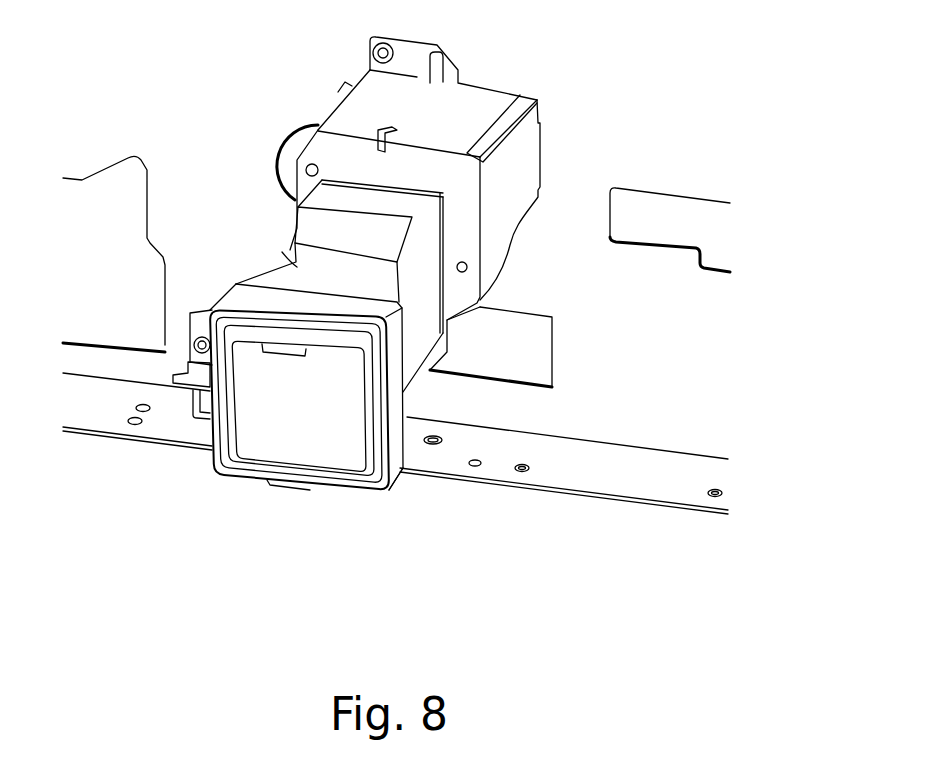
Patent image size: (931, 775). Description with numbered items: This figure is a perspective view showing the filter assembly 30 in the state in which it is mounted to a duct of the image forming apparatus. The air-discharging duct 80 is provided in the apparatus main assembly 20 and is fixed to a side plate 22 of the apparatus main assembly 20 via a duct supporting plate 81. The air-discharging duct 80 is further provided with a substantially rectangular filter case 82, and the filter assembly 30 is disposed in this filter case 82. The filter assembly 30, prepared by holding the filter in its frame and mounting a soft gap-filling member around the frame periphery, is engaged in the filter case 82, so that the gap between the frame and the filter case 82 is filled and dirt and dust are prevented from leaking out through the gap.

The apparatus main assembly 20 is at (722, 396).
The side plate 22 is at (578, 423).
The filter assembly 30 is at (290, 463).
The air-discharging duct 80 is at (297, 267).
The duct supporting plate 81 is at (523, 150).
The filter case 82 is at (222, 457).